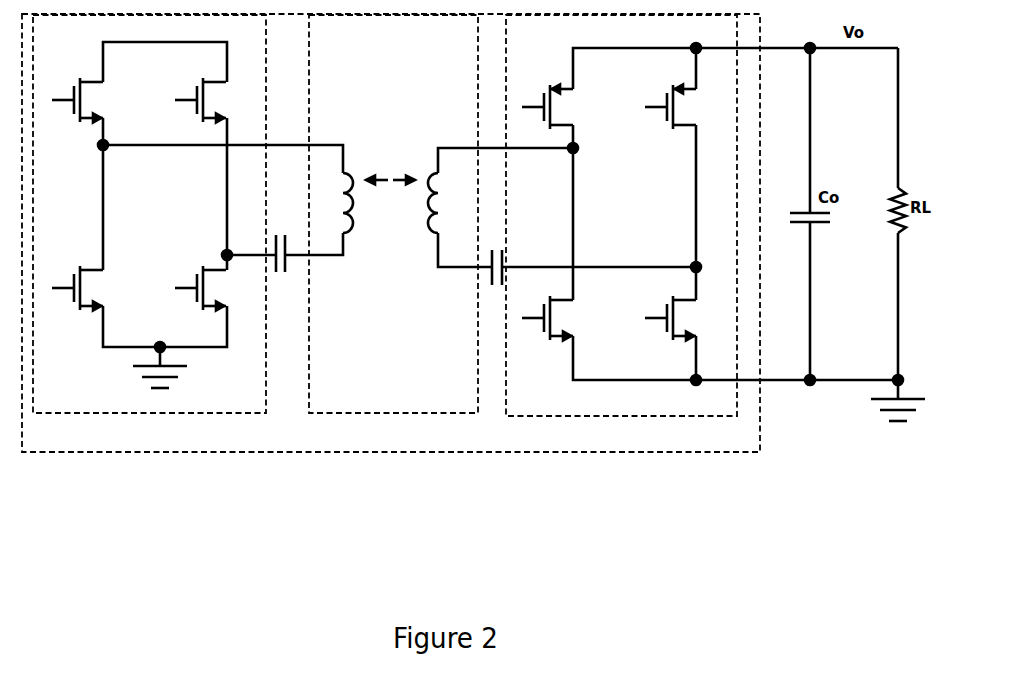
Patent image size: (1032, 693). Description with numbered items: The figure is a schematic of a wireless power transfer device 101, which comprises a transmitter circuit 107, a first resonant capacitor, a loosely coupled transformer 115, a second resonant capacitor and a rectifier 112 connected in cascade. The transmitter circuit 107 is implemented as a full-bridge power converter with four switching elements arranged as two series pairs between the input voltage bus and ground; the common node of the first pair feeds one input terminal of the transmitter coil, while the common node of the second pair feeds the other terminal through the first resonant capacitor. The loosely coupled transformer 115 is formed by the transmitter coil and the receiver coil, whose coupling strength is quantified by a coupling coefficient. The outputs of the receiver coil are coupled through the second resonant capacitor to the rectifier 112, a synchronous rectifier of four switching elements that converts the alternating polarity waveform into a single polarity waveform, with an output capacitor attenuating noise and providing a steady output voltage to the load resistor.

The wireless power transfer device 101 is at (395, 444).
The transmitter circuit 107 is at (75, 401).
The loosely coupled transformer 115 is at (398, 399).
The rectifier 112 is at (543, 406).